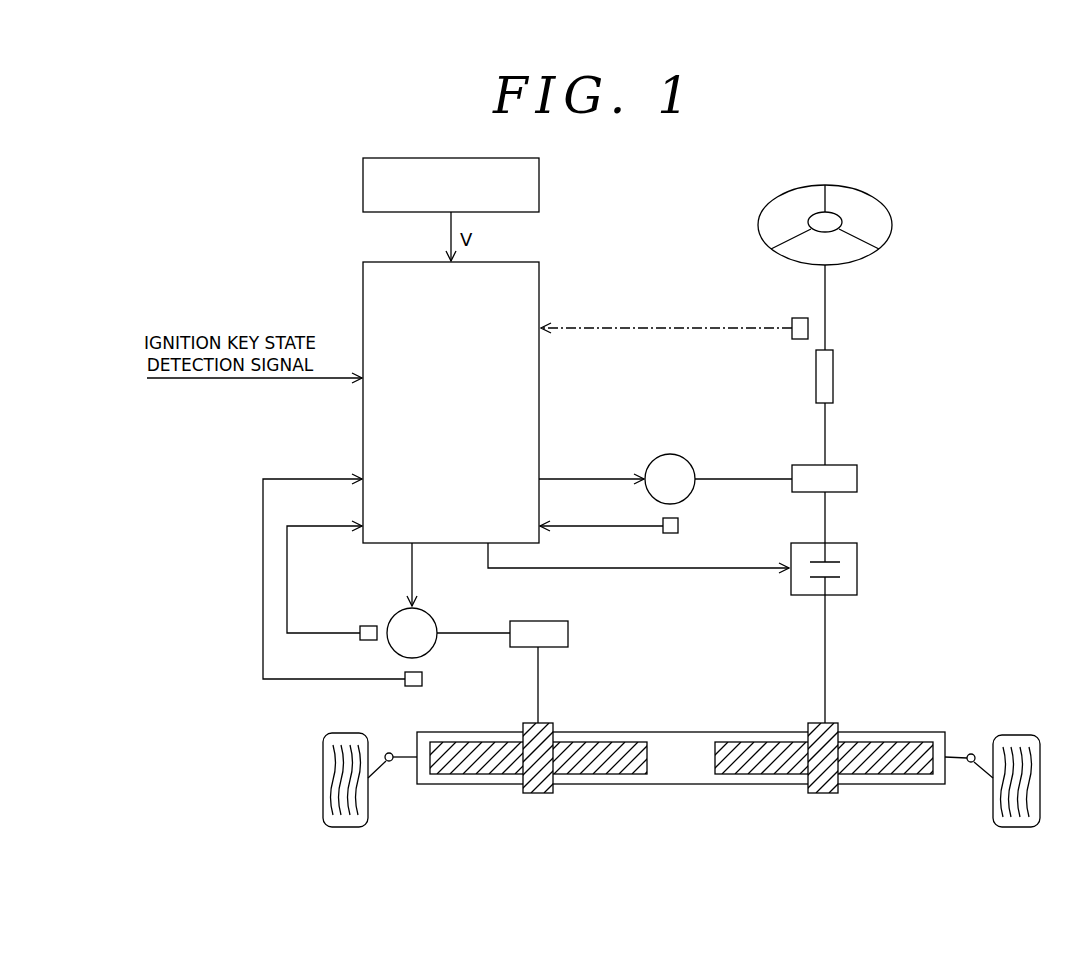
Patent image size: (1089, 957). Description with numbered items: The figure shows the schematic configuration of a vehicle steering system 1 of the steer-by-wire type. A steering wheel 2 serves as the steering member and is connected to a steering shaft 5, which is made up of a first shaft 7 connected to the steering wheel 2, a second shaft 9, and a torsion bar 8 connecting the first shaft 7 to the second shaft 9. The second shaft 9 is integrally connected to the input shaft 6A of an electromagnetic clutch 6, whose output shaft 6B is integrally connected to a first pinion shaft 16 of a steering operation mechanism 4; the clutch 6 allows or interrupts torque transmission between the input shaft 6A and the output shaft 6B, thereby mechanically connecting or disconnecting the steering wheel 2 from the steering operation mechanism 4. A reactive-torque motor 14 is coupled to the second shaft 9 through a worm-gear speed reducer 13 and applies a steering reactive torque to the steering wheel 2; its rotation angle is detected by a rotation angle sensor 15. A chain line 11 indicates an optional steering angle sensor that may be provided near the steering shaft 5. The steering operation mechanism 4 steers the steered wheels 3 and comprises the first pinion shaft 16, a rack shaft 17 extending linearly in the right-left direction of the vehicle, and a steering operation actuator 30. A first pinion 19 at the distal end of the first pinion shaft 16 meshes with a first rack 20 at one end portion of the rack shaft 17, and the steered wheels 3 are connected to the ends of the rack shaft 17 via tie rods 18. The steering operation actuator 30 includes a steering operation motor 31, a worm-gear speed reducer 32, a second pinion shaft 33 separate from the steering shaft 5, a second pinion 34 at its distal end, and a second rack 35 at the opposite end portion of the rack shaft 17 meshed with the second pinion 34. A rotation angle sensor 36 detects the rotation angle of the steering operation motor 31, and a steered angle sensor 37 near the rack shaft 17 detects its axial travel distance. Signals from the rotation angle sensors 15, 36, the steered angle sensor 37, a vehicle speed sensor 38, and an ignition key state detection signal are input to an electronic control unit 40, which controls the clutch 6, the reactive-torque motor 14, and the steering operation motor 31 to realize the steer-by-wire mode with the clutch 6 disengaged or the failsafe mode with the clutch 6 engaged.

The vehicle steering system 1 is at (694, 207).
The steering wheel 2 is at (892, 207).
The steered wheels 3 is at (323, 790).
The steering operation mechanism 4 is at (680, 750).
The steering shaft 5 is at (870, 365).
The clutch 6 is at (698, 571).
The input shaft 6A is at (832, 556).
The output shaft 6B is at (832, 586).
The first shaft 7 is at (826, 330).
The torsion bar 8 is at (834, 377).
The second shaft 9 is at (855, 434).
The chain line 11 is at (799, 340).
The speed reducer 13 is at (858, 479).
The reactive-torque motor 14 is at (672, 455).
The rotation angle sensor 15 is at (680, 526).
The first pinion shaft 16 is at (826, 672).
The rack shaft 17 is at (688, 784).
The tie rods 18 is at (386, 764).
The first pinion 19 is at (822, 793).
The first rack 20 is at (890, 776).
The steering operation actuator 30 is at (447, 601).
The steering operation motor 31 is at (394, 654).
The speed reducer 32 is at (568, 634).
The second pinion shaft 33 is at (539, 677).
The second pinion 34 is at (538, 793).
The second rack 35 is at (468, 775).
The rotation angle sensor 36 is at (364, 625).
The steered angle sensor 37 is at (410, 687).
The vehicle speed sensor 38 is at (363, 182).
The electronic control unit 40 is at (363, 270).